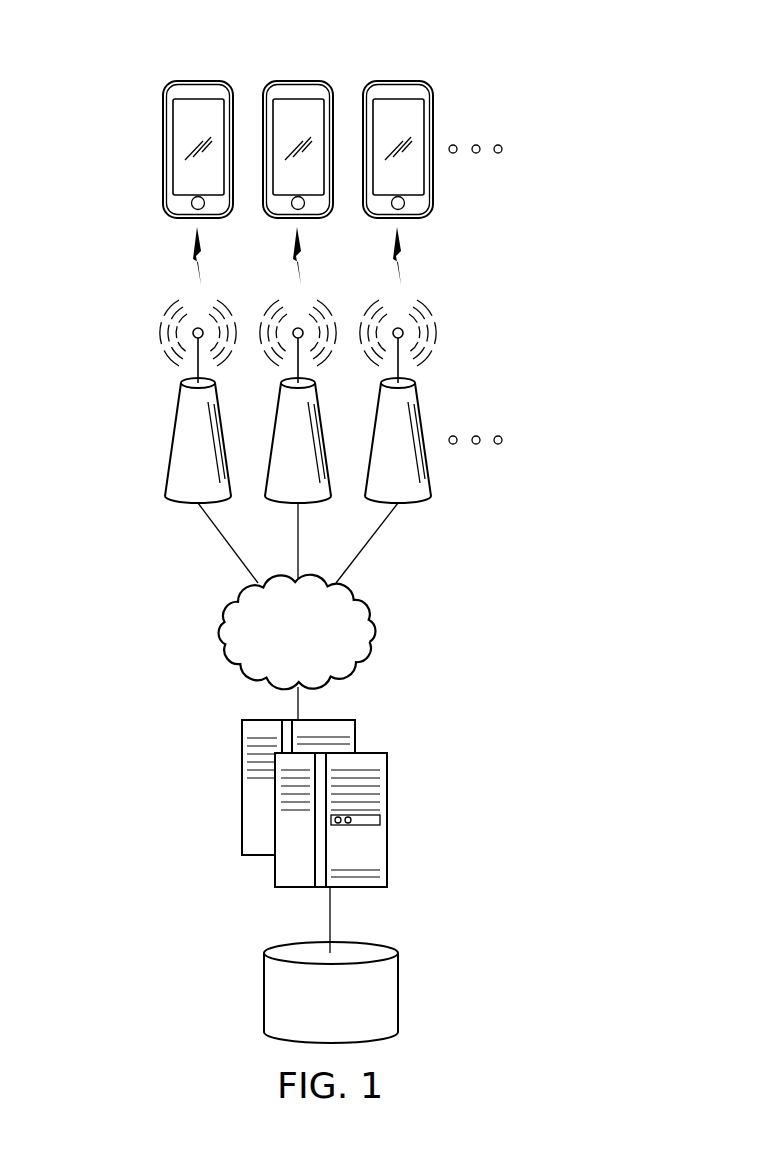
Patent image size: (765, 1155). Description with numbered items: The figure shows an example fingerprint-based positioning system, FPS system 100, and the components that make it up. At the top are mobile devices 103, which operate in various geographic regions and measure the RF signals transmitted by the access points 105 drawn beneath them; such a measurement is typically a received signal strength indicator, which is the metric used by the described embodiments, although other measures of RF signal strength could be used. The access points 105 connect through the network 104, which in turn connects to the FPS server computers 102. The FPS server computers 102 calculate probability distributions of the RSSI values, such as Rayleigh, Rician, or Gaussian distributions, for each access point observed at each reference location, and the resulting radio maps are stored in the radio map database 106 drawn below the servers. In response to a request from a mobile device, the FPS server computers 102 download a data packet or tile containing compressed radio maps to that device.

The FPS system 100 is at (350, 54).
The FPS server computers 102 is at (395, 838).
The mobile device 103 is at (139, 147).
The network 104 is at (375, 632).
The access points 105 is at (142, 442).
The radio map database 106 is at (264, 992).